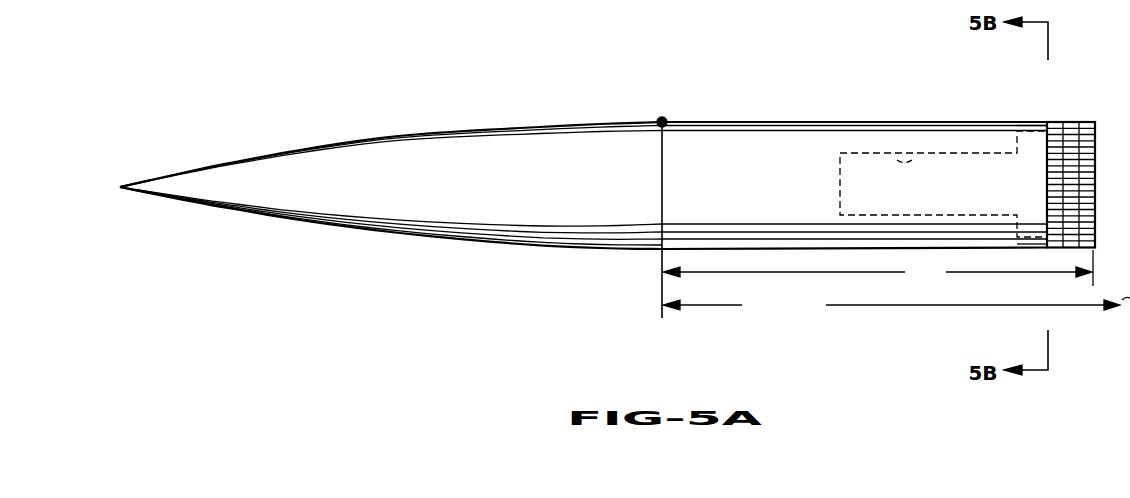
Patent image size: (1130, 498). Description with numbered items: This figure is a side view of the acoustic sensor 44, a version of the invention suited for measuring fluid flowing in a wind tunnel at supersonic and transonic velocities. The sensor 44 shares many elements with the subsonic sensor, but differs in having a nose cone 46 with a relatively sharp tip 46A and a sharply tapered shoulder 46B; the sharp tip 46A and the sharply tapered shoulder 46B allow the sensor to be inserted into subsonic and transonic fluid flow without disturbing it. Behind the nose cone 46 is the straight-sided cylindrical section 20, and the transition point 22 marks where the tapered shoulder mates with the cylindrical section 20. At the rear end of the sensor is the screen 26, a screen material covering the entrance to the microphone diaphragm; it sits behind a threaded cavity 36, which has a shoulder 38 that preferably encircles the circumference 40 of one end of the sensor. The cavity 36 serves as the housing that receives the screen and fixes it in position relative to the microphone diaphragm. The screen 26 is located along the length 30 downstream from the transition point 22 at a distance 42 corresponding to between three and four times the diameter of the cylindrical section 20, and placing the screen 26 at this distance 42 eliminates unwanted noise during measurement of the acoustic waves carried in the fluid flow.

The straight-sided cylindrical section 20 is at (766, 121).
The transition point 22 is at (658, 118).
The screen 26 is at (1086, 121).
The length 30 is at (896, 306).
The threaded cavity 36 is at (897, 157).
The shoulder 38 is at (1015, 143).
The circumference 40 is at (1024, 121).
The distance 42 is at (878, 268).
The sensor 44 is at (545, 85).
The nose cone 46 is at (307, 148).
The sharp tip 46A is at (118, 187).
The shoulder 46B is at (443, 132).